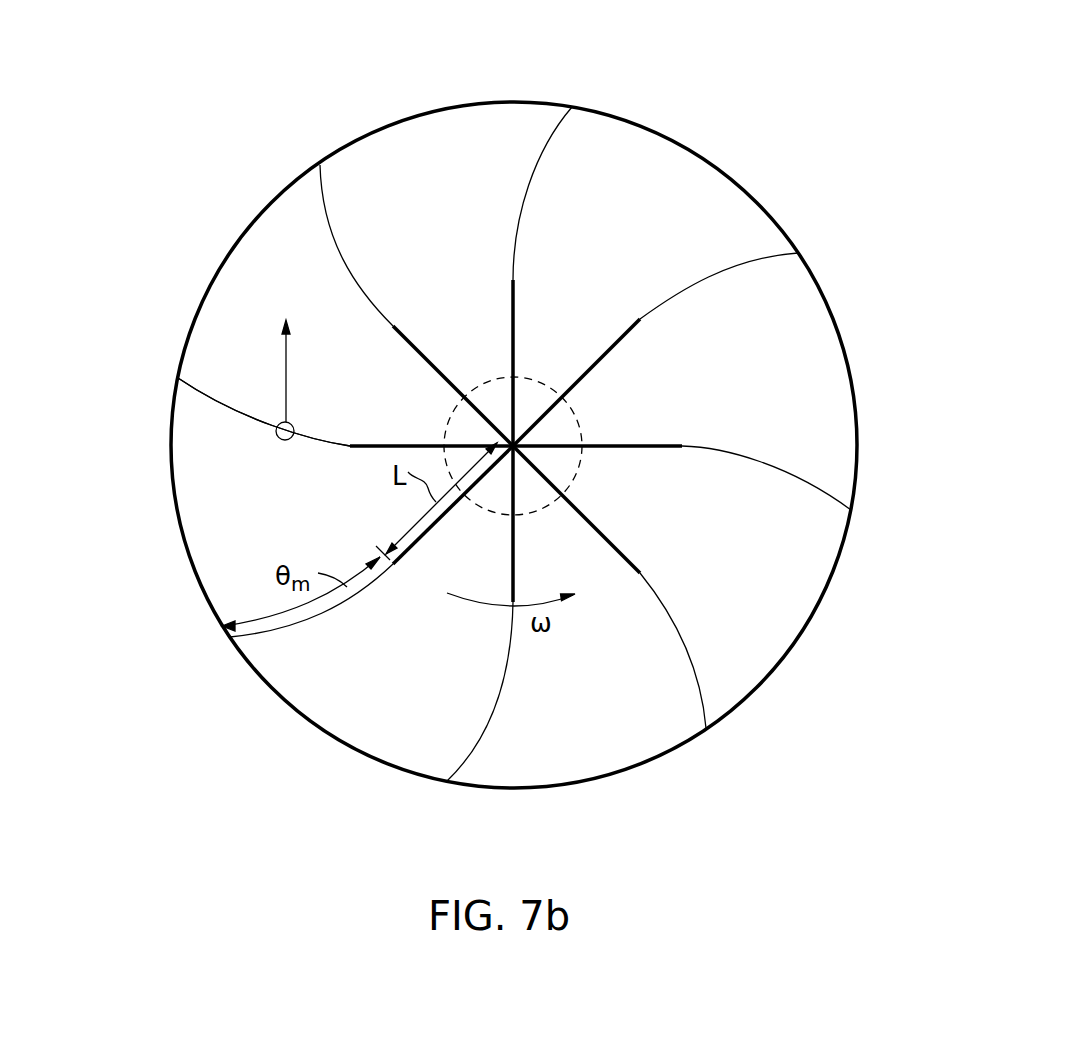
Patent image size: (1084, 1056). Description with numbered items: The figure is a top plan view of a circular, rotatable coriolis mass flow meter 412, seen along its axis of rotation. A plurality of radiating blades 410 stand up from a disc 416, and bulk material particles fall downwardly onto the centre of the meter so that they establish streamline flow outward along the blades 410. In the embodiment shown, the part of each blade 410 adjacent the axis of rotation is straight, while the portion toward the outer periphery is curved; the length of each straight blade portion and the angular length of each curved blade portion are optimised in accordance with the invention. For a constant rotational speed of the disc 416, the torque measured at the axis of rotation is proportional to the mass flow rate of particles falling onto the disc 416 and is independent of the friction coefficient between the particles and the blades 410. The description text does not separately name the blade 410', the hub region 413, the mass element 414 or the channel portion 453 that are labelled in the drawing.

The radiating blades 410 is at (572, 462).
The spiral channel 410' is at (214, 439).
The coriolis mass flow meter 412 is at (862, 326).
The hub region 413 is at (513, 446).
The mass element 414 is at (295, 431).
The disc 416 is at (312, 511).
The channel outer portion 453 is at (188, 392).